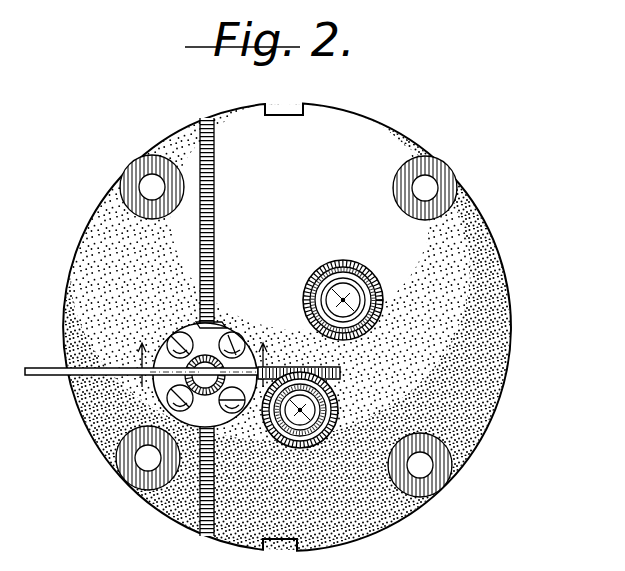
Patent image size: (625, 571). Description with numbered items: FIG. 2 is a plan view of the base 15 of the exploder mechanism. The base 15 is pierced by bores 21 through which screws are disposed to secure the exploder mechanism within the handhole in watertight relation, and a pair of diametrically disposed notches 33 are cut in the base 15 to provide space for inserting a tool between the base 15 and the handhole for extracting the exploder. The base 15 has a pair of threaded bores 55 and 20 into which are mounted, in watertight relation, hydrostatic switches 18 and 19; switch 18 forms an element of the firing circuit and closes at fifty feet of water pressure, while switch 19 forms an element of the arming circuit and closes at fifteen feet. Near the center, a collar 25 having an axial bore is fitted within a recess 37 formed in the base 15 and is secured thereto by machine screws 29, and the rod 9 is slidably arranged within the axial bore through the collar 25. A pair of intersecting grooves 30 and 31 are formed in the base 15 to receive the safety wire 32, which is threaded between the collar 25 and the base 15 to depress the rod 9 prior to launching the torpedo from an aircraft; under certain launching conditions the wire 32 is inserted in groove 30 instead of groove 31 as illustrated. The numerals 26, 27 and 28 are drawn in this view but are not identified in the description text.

The base 15 is at (79, 243).
The bores 21 is at (146, 181).
The notches 33 is at (283, 113).
The groove 30 is at (215, 240).
The collar 25 is at (188, 330).
The recess 37 is at (226, 325).
The machine screws 29 is at (174, 336).
The center bearing 26 is at (212, 388).
The rod 9 is at (205, 358).
The safety wire 32 is at (48, 368).
The groove 31 is at (303, 371).
The hydrostatic switch 18 is at (318, 272).
The threaded bore 55 is at (307, 298).
The screw 27 is at (352, 297).
The hydrostatic switch 19 is at (284, 432).
The threaded bore 20 is at (293, 436).
The screw 28 is at (314, 408).